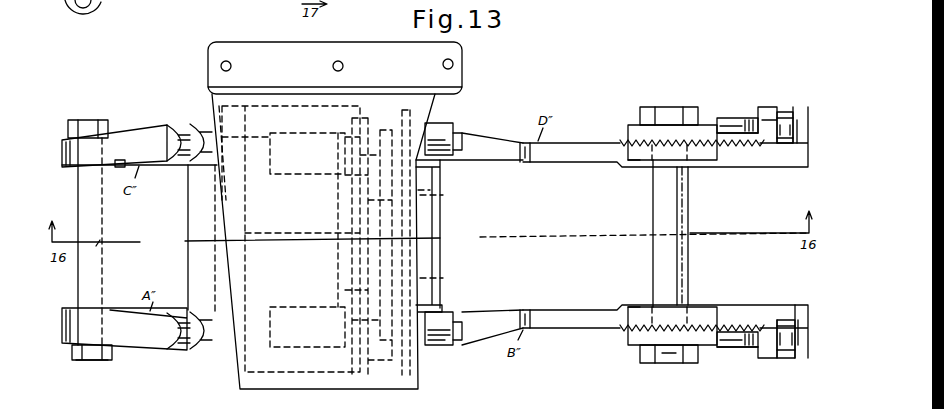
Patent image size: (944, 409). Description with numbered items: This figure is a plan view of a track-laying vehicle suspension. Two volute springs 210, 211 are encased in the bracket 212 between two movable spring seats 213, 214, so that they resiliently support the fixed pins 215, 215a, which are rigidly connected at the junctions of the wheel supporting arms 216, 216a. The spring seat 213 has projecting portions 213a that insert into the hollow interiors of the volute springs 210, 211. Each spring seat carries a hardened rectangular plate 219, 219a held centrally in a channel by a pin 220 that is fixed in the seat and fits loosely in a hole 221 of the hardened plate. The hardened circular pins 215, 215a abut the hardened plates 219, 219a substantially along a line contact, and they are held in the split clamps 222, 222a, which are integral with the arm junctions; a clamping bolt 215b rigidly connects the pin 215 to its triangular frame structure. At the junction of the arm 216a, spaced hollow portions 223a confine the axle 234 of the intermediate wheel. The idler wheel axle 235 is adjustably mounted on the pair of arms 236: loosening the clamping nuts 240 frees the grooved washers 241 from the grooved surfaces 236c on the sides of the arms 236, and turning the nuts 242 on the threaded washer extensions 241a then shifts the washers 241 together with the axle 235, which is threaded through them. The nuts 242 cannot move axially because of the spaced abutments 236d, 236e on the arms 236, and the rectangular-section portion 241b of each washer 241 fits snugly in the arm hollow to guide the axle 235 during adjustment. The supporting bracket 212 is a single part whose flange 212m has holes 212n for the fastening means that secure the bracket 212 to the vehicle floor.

The volute spring 210 is at (364, 361).
The volute spring 211 is at (358, 121).
The bracket 212 is at (460, 91).
The flange 212m is at (315, 58).
The holes 212n is at (457, 62).
The spring seat 213 is at (402, 125).
The projecting portions 213a is at (360, 161).
The spring seat 214 is at (232, 110).
The fixed pin 215 is at (440, 239).
The fixed pin 215a is at (197, 232).
The clamping bolt 215b is at (457, 130).
The wheel supporting arm 216 is at (492, 140).
The wheel supporting arm 216a is at (143, 128).
The hardened rectangular plate 219 is at (435, 215).
The hardened rectangular plate 219a is at (215, 268).
The pin 220 is at (449, 227).
The hole 221 is at (448, 238).
The split clamp 222 is at (445, 128).
The split clamp 222a is at (198, 147).
The hollow portions 223a is at (86, 18).
The axle 234 is at (100, 241).
The idler wheel axle 235 is at (682, 238).
The arm 236 is at (580, 143).
The grooved surfaces 236c is at (742, 143).
The abutment 236d is at (769, 120).
The abutment 236e is at (803, 124).
The clamping nut 240 is at (688, 110).
The washer 241 is at (627, 126).
The threaded washer extension 241a is at (735, 121).
The rectangular portion 241b is at (628, 167).
The nut 242 is at (781, 115).